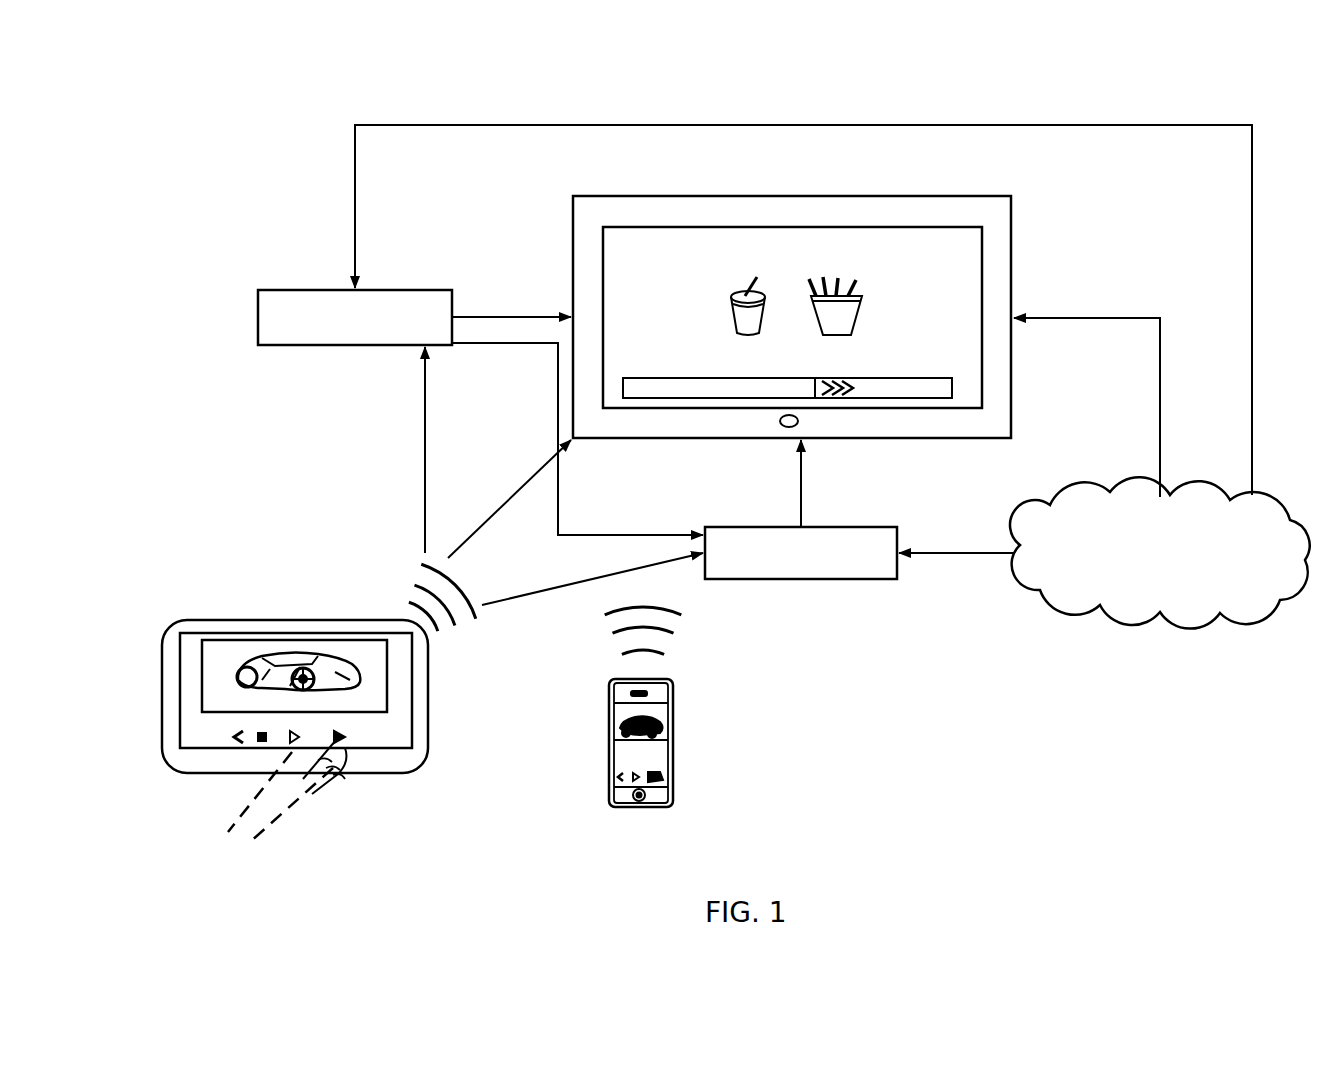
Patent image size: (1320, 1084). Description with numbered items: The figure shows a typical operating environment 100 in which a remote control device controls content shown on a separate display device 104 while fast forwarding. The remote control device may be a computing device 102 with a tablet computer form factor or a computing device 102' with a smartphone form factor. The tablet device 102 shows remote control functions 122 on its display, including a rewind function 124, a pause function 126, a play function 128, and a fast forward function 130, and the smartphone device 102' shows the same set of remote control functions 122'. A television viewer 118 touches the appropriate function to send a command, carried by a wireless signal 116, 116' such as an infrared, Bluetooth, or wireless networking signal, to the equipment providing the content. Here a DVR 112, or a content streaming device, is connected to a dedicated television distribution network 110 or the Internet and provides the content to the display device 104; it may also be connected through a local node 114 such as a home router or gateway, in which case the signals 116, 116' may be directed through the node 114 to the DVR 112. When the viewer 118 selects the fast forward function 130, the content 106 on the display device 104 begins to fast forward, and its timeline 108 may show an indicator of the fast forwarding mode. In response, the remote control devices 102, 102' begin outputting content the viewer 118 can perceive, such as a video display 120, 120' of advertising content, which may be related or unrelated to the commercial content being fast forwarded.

The operating environment 100 is at (252, 163).
The computing device 102 is at (327, 696).
The computing device 102' is at (615, 764).
The display device 104 is at (1015, 247).
The content 106 is at (875, 312).
The timeline 108 is at (886, 382).
The television distribution network 110 is at (1025, 577).
The DVR 112 is at (800, 579).
The local node 114 is at (258, 293).
The wireless signal 116 is at (419, 585).
The wireless signal 116' is at (680, 630).
The television viewer 118 is at (268, 805).
The video display 120 is at (272, 637).
The video display 120' is at (689, 714).
The remote control functions 122 is at (162, 724).
The remote control functions 122' is at (673, 798).
The rewind function 124 is at (238, 738).
The pause function 126 is at (263, 739).
The play function 128 is at (295, 739).
The fast forward function 130 is at (346, 742).